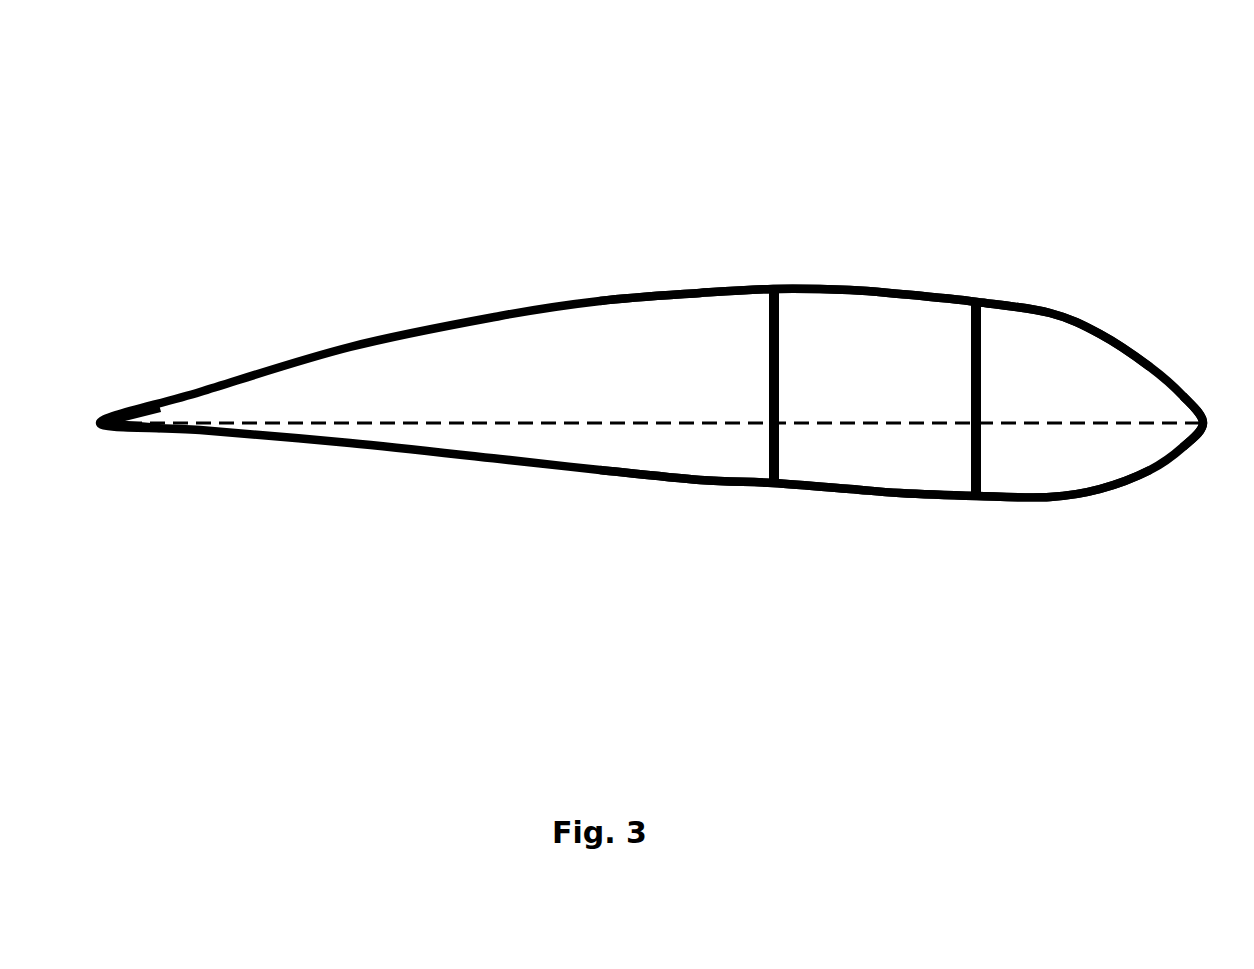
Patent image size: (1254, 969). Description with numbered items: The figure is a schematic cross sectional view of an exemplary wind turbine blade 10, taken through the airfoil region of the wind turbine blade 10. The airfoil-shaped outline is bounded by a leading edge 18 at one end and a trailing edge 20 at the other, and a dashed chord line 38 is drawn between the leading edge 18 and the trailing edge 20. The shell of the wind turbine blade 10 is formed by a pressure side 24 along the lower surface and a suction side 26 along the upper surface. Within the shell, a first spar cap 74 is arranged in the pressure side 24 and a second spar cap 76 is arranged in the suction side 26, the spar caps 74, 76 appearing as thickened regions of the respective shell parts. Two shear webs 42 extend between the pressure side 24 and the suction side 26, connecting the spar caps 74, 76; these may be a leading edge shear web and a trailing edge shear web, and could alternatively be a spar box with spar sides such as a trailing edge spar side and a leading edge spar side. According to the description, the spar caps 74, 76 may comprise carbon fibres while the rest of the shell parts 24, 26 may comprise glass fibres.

The wind turbine blade 10 is at (539, 114).
The leading edge 18 is at (1205, 421).
The trailing edge 20 is at (102, 421).
The pressure side 24 is at (990, 503).
The suction side 26 is at (1018, 306).
The chord line 38 is at (653, 422).
The shear webs 42 is at (769, 450).
The first spar cap 74 is at (890, 499).
The second spar cap 76 is at (890, 288).